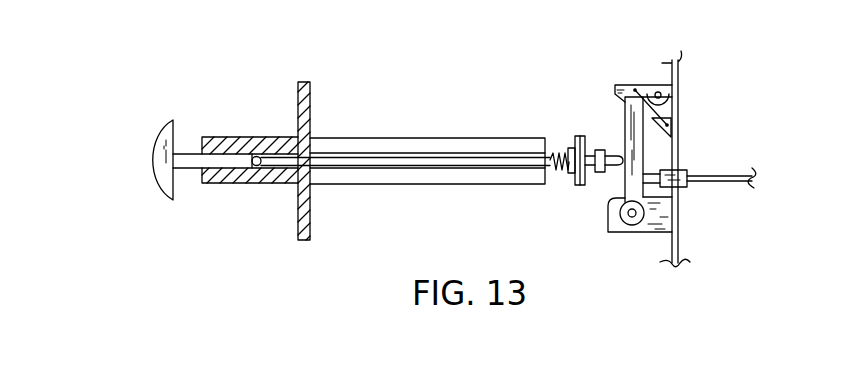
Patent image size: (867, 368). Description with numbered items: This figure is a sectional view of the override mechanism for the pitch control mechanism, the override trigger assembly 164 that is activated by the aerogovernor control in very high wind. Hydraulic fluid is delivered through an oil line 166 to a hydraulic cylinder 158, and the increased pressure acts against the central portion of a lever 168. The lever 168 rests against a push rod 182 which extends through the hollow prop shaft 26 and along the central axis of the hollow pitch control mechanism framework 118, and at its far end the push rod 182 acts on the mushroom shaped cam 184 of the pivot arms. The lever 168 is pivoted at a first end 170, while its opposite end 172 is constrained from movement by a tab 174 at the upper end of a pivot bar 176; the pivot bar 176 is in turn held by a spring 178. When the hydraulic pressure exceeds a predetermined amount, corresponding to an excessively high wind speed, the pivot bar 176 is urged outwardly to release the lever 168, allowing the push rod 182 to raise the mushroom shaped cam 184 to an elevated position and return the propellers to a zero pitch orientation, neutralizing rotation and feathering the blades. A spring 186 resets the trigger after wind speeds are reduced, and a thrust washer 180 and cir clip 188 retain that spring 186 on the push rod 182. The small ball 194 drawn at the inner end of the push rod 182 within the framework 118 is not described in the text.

The mushroom shaped cam 184 is at (157, 140).
The pitch control mechanism framework 118 is at (205, 183).
The ball 194 is at (264, 166).
The push rod 182 is at (353, 137).
The hollow prop shaft 26 is at (345, 185).
The cir clip 188 is at (578, 137).
The spring 186 is at (562, 180).
The thrust washer 180 is at (580, 187).
The override trigger assembly 164 is at (771, 76).
The tab 174 is at (613, 85).
The pivot bar 176 is at (653, 83).
The spring 178 is at (668, 106).
The lever 168 is at (630, 132).
The opposite end 172 is at (630, 112).
The first end 170 is at (630, 226).
The oil line 166 is at (708, 175).
The hydraulic cylinder 158 is at (715, 159).